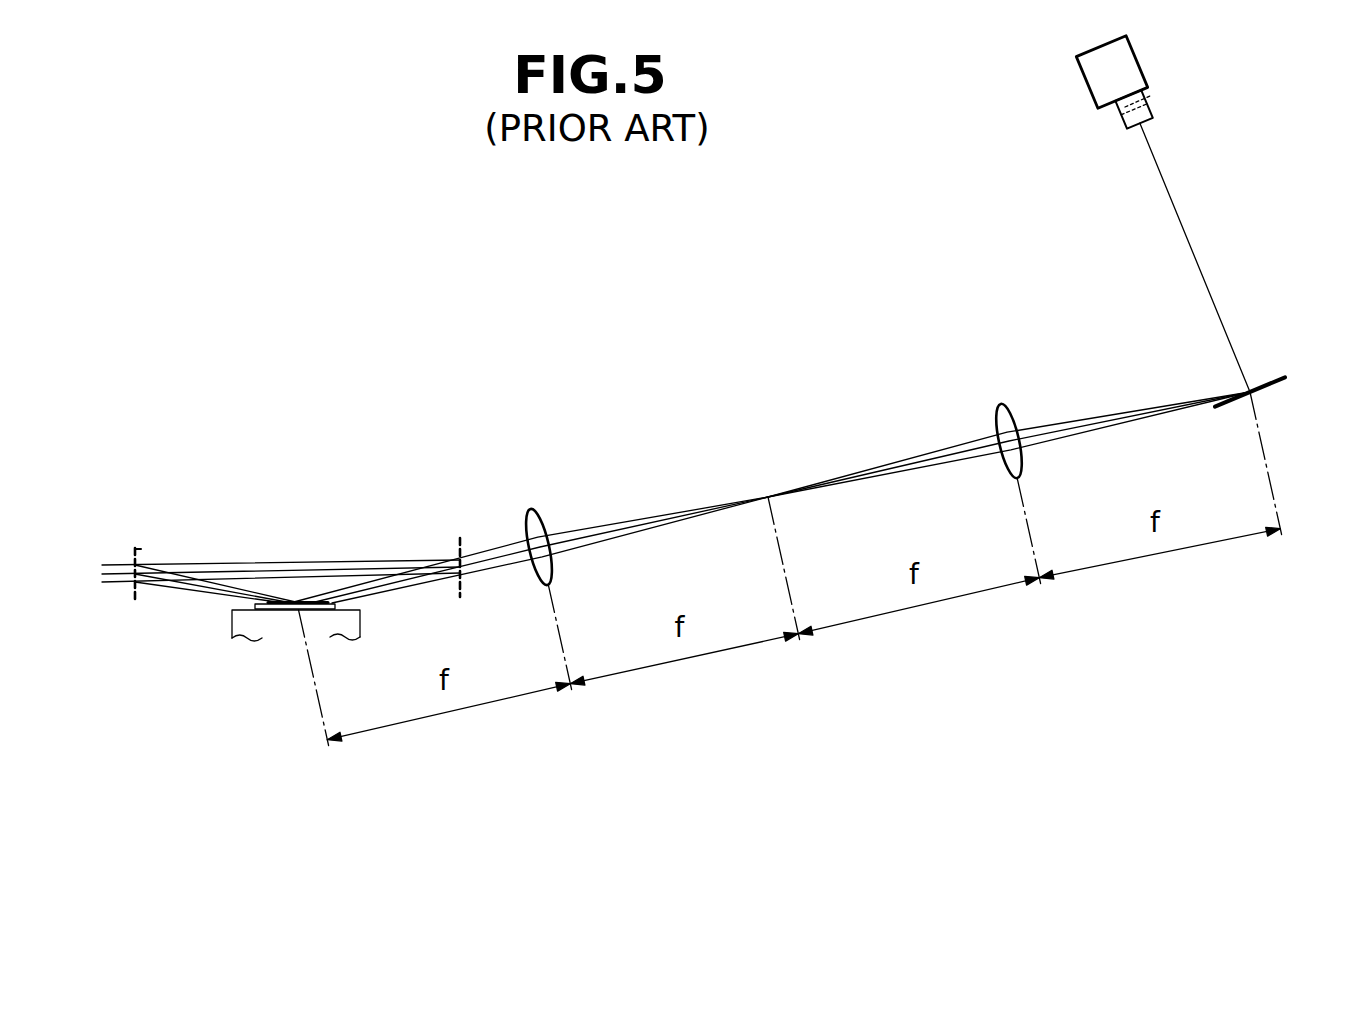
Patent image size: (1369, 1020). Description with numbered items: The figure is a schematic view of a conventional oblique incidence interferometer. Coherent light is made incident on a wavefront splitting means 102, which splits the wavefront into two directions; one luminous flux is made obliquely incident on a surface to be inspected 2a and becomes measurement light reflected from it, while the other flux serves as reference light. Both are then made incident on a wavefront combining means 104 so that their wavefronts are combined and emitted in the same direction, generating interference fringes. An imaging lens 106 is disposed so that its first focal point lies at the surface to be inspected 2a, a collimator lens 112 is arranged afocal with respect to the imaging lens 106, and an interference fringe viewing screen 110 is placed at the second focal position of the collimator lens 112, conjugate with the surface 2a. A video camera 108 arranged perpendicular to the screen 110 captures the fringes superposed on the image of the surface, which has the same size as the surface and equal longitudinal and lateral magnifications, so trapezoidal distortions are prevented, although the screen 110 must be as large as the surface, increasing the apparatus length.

The surface to be inspected 2a is at (318, 600).
The wavefront splitting means 102 is at (141, 549).
The wavefront combining means 104 is at (458, 541).
The imaging lens 106 is at (542, 523).
The video camera 108 is at (1100, 78).
The interference fringe viewing screen 110 is at (1266, 388).
The collimator lens 112 is at (999, 424).